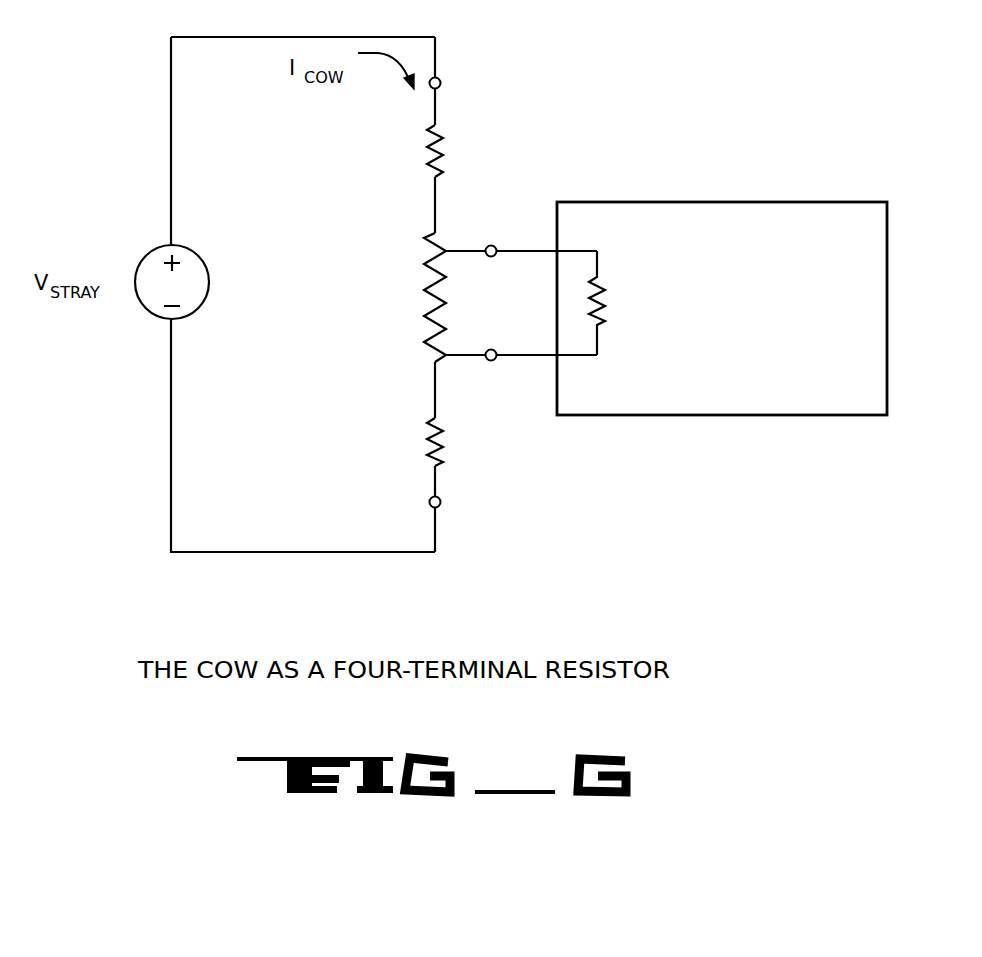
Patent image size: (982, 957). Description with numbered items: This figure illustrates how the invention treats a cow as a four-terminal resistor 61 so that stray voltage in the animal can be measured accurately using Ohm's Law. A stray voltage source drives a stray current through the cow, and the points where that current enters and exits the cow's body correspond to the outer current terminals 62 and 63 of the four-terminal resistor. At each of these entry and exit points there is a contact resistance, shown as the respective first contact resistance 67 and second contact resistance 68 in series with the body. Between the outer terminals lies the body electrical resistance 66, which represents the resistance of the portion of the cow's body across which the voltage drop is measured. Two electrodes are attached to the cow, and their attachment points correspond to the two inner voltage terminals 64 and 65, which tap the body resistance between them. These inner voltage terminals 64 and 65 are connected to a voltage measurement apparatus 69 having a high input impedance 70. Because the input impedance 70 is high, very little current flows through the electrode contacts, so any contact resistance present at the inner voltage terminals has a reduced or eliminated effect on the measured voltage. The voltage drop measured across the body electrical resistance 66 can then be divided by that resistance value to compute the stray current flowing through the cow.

The four-terminal resistor 61 is at (424, 346).
The outer current terminal 62 is at (440, 80).
The outer current terminal 63 is at (441, 500).
The inner voltage terminal 64 is at (494, 245).
The inner voltage terminal 65 is at (491, 361).
The electrical resistance R_COW 66 is at (373, 313).
The contact resistance R_CONTACT1 67 is at (493, 130).
The contact resistance R_CONTACT2 68 is at (519, 467).
The voltage measurement apparatus 69 is at (763, 199).
The input impedance R_IN 70 is at (633, 276).